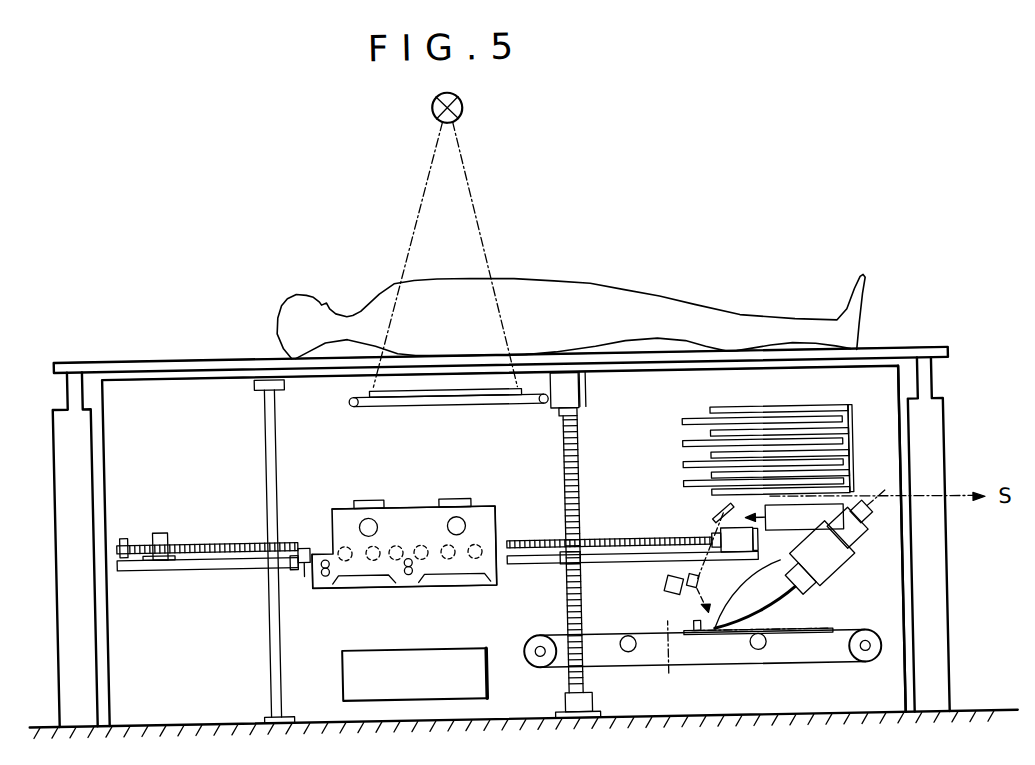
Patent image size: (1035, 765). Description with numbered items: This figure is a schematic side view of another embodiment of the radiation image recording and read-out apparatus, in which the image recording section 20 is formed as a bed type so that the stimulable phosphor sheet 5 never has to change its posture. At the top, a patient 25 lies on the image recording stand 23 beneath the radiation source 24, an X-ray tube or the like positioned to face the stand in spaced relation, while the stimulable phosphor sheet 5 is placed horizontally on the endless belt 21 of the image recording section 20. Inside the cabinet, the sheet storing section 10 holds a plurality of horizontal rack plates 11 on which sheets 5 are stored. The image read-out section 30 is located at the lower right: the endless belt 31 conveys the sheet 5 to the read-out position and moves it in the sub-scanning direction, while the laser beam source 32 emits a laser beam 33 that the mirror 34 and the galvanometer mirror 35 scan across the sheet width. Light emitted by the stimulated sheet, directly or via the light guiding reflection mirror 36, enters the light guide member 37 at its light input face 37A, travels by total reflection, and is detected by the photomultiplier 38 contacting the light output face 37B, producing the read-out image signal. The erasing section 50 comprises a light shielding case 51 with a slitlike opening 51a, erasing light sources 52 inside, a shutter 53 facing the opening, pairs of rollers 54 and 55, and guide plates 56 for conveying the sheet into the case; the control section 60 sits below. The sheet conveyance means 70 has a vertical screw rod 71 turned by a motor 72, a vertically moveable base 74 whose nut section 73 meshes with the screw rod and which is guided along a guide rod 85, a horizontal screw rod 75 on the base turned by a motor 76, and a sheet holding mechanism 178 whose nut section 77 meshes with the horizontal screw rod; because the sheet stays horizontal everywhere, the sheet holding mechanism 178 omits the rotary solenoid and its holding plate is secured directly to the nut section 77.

The stimulable phosphor sheet 5 is at (449, 394).
The sheet storing section 10 is at (882, 454).
The rack plate 11 is at (853, 471).
The image recording section 20 is at (527, 222).
The endless belt 21 is at (506, 400).
The image recording stand 23 is at (549, 356).
The radiation source 24 is at (432, 108).
The patient 25 is at (293, 293).
The image read-out section 30 is at (884, 587).
The endless belt 31 is at (808, 674).
The laser beam source 32 is at (851, 506).
The laser beam 33 is at (686, 595).
The mirror 34 is at (713, 519).
The galvanometer mirror 35 is at (665, 587).
The light guiding reflection mirror 36 is at (666, 676).
The light guide member 37 is at (775, 609).
The light input face 37A is at (713, 641).
The light output face 37B is at (812, 589).
The photomultiplier 38 is at (838, 554).
The erasing section 50 is at (344, 494).
The case 51 is at (410, 506).
The slitlike opening 51a is at (312, 554).
The erasing light source 52 is at (476, 544).
The shutter 53 is at (300, 574).
The pair of rollers 54 is at (331, 579).
The pair of rollers 55 is at (414, 578).
The guide plate 56 is at (372, 582).
The control section 60 is at (398, 691).
The sheet conveyance means 70 is at (631, 434).
The screw rod 71 is at (581, 505).
The motor 72 is at (584, 393).
The nut section 73 is at (585, 566).
The vertically moveable base 74 is at (540, 565).
The screw rod 75 is at (547, 540).
The motor 76 is at (738, 556).
The nut section 77 is at (160, 564).
The guide rod 85 is at (268, 441).
The sheet holding mechanism 178 is at (155, 521).